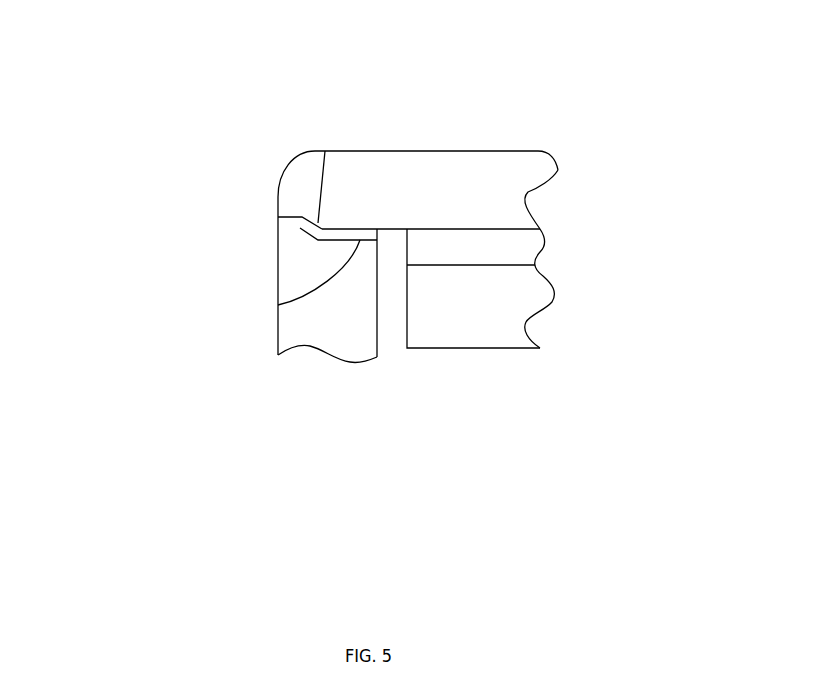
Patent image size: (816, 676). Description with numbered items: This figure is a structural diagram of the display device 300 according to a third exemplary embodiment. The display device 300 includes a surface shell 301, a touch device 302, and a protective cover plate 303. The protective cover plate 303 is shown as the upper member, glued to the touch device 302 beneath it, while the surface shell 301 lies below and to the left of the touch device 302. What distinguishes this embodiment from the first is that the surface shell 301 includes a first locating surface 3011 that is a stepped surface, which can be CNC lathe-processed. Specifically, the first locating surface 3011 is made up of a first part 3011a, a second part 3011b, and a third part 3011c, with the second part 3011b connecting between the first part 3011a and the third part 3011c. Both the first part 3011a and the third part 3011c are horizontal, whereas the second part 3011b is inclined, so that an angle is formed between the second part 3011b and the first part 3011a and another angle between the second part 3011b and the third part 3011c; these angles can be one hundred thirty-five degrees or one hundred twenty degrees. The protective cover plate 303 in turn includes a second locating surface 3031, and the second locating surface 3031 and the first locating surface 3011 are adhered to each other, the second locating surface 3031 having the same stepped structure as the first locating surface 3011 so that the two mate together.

The display device 300 is at (435, 135).
The protective cover plate 303 is at (482, 144).
The second locating surface 3031 is at (325, 151).
The touch device 302 is at (500, 325).
The first locating surface 3011 is at (201, 281).
The first part 3011a is at (307, 233).
The second part 3011b is at (310, 234).
The third part 3011c is at (278, 305).
The surface shell 301 is at (330, 318).